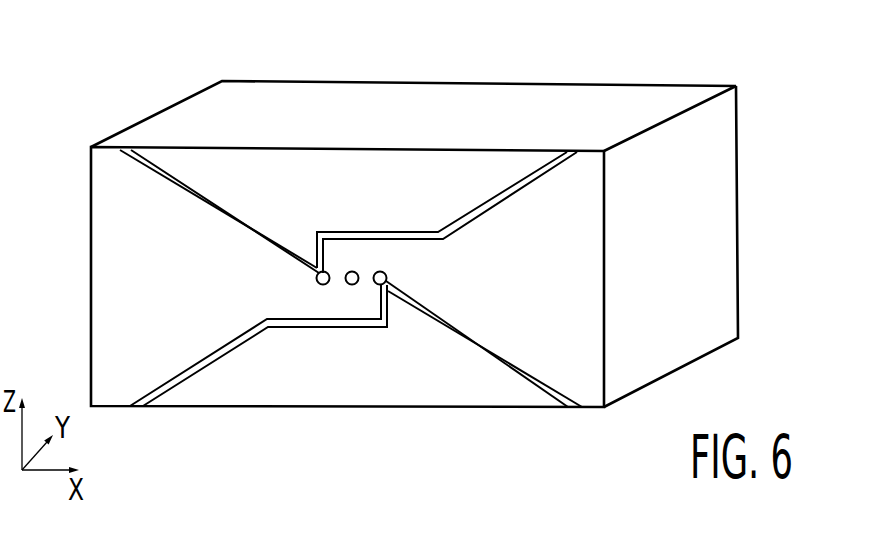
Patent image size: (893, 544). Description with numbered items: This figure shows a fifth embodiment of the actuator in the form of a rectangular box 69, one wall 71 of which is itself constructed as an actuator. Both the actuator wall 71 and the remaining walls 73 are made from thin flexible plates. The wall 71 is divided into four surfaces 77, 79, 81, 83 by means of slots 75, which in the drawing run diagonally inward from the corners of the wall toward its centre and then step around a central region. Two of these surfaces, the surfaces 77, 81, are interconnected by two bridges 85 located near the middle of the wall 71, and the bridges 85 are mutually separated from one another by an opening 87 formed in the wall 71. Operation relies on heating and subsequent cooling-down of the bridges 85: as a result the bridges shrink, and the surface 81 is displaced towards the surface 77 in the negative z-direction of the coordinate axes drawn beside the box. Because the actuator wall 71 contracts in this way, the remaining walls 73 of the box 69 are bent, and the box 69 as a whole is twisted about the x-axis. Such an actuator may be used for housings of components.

The rectangular box 69 is at (743, 60).
The wall 71 is at (79, 301).
The walls 73 is at (542, 104).
The slots 75 is at (205, 367).
The surface 77 is at (107, 209).
The surface 79 is at (298, 210).
The surface 81 is at (583, 366).
The surface 83 is at (280, 365).
The bridges 85 is at (362, 287).
The opening 87 is at (353, 271).